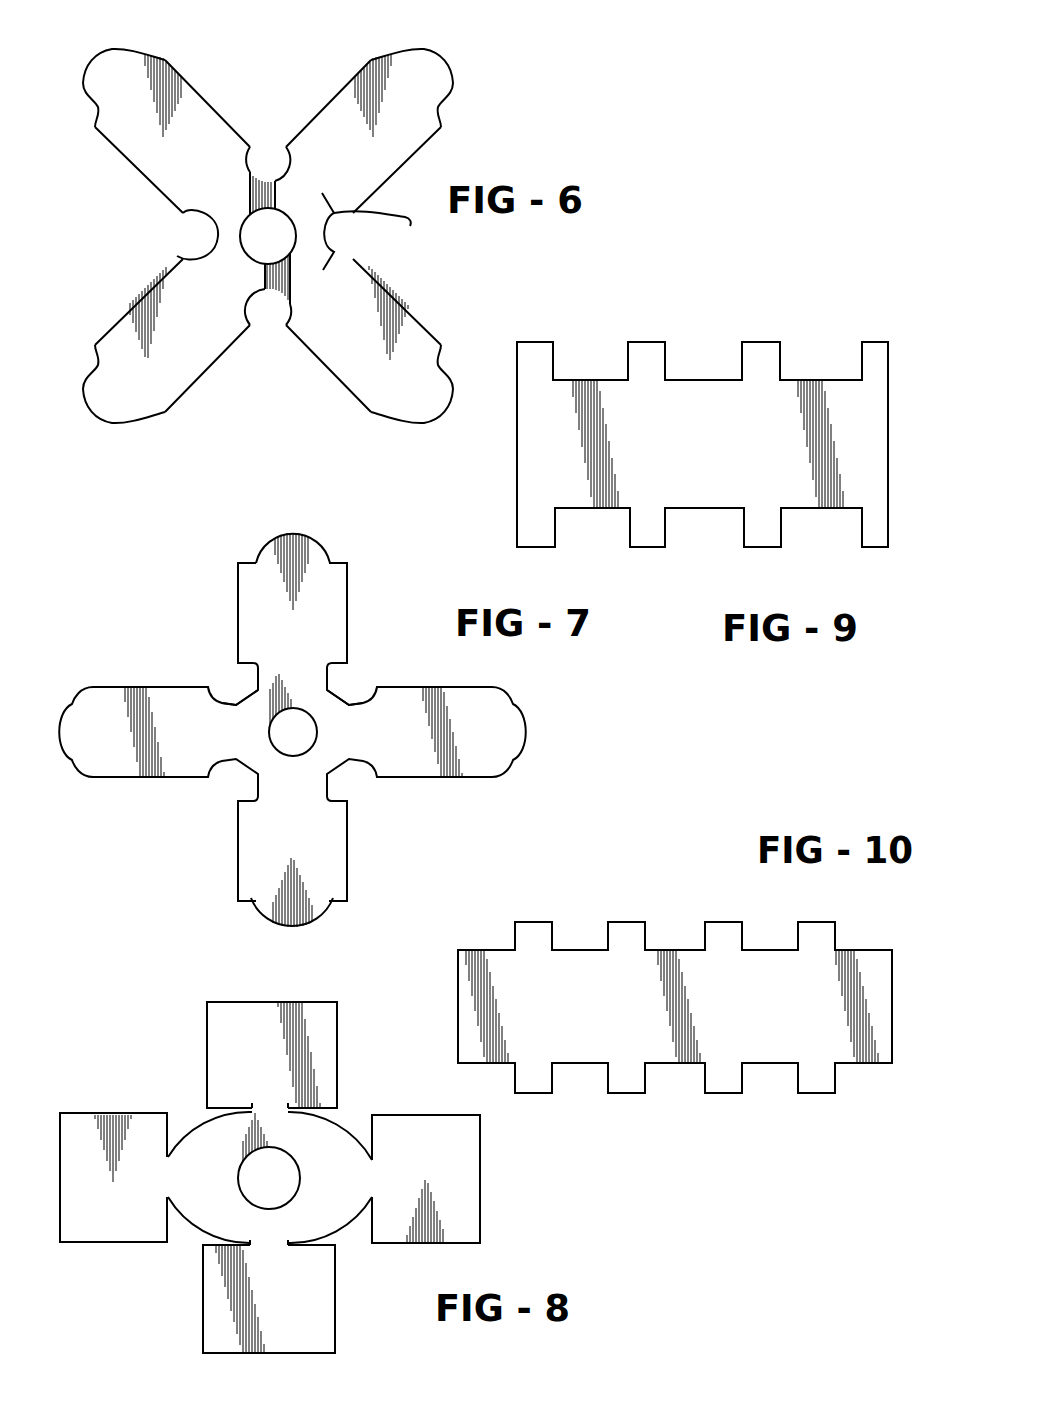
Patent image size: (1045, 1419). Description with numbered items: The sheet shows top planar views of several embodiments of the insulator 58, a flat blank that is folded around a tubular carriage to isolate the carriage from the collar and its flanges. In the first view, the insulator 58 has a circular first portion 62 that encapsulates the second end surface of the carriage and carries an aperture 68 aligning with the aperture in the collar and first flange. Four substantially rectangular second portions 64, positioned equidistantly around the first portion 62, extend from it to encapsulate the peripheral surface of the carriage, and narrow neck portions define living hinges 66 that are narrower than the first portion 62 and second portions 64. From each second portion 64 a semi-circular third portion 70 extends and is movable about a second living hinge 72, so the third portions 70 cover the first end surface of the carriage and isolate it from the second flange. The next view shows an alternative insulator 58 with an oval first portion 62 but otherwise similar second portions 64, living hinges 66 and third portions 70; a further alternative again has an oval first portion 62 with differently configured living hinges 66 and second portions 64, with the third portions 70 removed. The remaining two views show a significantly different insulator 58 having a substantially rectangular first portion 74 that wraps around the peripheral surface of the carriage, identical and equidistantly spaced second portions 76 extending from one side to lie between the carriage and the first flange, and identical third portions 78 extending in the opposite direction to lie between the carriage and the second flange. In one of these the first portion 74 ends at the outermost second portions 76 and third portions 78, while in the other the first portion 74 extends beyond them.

In FIG. 6, the insulator 58 is at (292, 114).
In FIG. 9, the insulator 58 is at (706, 324).
In FIG. 7, the insulator 58 is at (212, 790).
In FIG. 8, the insulator 58 is at (176, 1098).
In FIG. 10, the insulator 58 is at (679, 905).
In FIG. 6, the first portion 62 is at (223, 233).
In FIG. 7, the first portion 62 is at (332, 707).
In FIG. 8, the first portion 62 is at (337, 1148).
In FIG. 6, the second portions 64 is at (340, 117).
In FIG. 7, the second portions 64 is at (248, 588).
In FIG. 8, the second portions 64 is at (243, 1015).
In FIG. 6, the living hinges 66 is at (334, 250).
In FIG. 7, the living hinges 66 is at (220, 705).
In FIG. 8, the living hinges 66 is at (165, 1177).
In FIG. 6, the aperture 68 is at (257, 247).
In FIG. 7, the aperture 68 is at (270, 730).
In FIG. 6, the third portions 70 is at (102, 63).
In FIG. 7, the third portions 70 is at (68, 727).
In FIG. 6, the second living hinge 72 is at (123, 70).
In FIG. 7, the second living hinge 72 is at (318, 900).
In FIG. 9, the first portion 74 is at (695, 430).
In FIG. 10, the first portion 74 is at (758, 1033).
In FIG. 9, the second portions 76 is at (637, 353).
In FIG. 10, the second portions 76 is at (613, 932).
In FIG. 9, the third portions 78 is at (632, 525).
In FIG. 10, the third portions 78 is at (710, 1078).